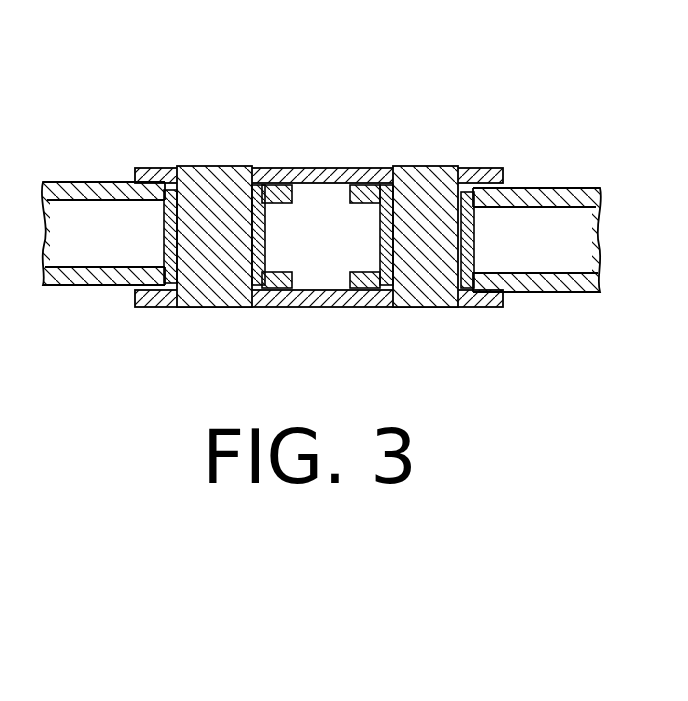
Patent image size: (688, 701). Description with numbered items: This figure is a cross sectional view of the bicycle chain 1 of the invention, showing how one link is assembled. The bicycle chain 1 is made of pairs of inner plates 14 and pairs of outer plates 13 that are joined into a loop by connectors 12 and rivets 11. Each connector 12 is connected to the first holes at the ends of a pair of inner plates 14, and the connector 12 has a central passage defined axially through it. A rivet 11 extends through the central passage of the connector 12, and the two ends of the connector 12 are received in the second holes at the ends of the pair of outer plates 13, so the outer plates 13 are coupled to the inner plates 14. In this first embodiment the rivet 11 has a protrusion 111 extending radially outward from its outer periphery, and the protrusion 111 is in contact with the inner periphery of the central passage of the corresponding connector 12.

The bicycle chain 1 is at (340, 182).
The rivet 11 is at (422, 188).
The protrusion 111 is at (390, 237).
The connector 12 is at (475, 233).
The outer plate 13 is at (325, 180).
The inner plate 14 is at (578, 197).